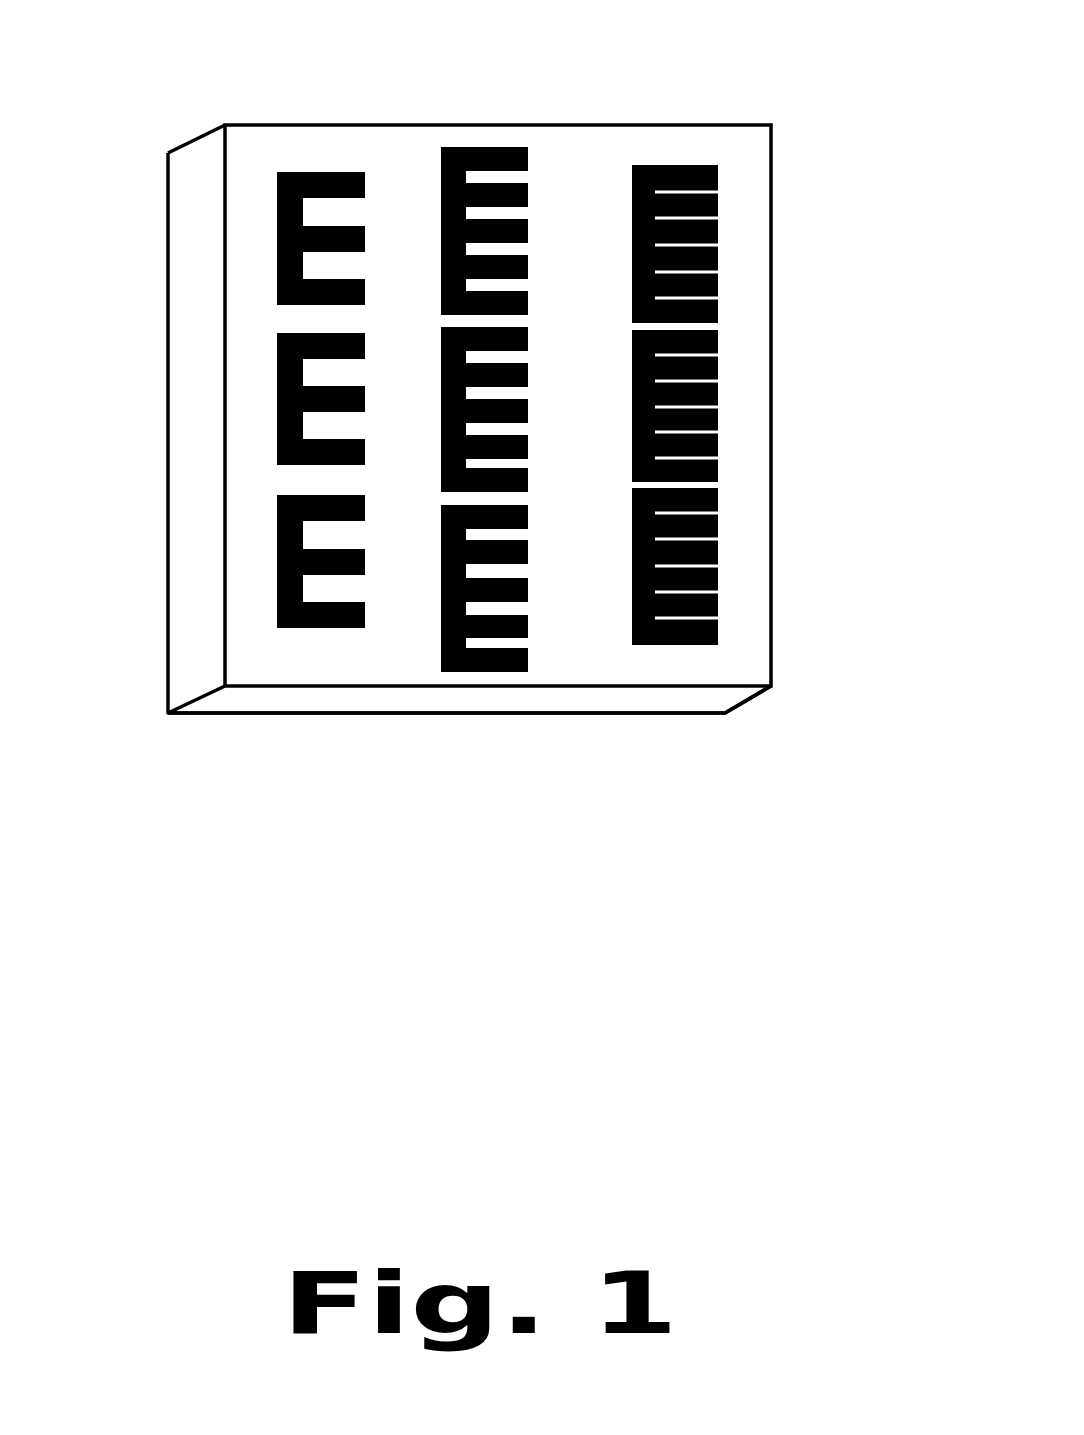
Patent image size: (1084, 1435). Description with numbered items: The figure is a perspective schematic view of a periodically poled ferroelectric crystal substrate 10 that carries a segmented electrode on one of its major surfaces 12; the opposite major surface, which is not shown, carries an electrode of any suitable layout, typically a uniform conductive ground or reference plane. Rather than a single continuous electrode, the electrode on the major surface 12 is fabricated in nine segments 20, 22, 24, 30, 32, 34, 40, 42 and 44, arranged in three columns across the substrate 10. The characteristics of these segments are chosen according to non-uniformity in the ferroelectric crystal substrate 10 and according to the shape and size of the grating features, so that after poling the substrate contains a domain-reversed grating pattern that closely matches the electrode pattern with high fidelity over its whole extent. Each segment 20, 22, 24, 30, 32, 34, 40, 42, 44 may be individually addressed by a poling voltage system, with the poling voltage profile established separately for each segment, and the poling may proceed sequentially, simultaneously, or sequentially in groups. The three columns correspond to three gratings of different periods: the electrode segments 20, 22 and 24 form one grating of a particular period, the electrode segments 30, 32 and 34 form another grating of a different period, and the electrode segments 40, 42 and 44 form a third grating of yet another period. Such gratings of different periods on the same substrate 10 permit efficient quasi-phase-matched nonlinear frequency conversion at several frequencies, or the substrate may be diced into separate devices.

The ferroelectric crystal substrate 10 is at (200, 180).
The major surface 12 is at (245, 672).
The electrode segment 20 is at (277, 250).
The electrode segment 22 is at (277, 407).
The electrode segment 24 is at (277, 562).
The electrode segment 30 is at (480, 148).
The electrode segment 32 is at (528, 410).
The electrode segment 34 is at (528, 585).
The electrode segment 40 is at (717, 233).
The electrode segment 42 is at (718, 390).
The electrode segment 44 is at (718, 548).